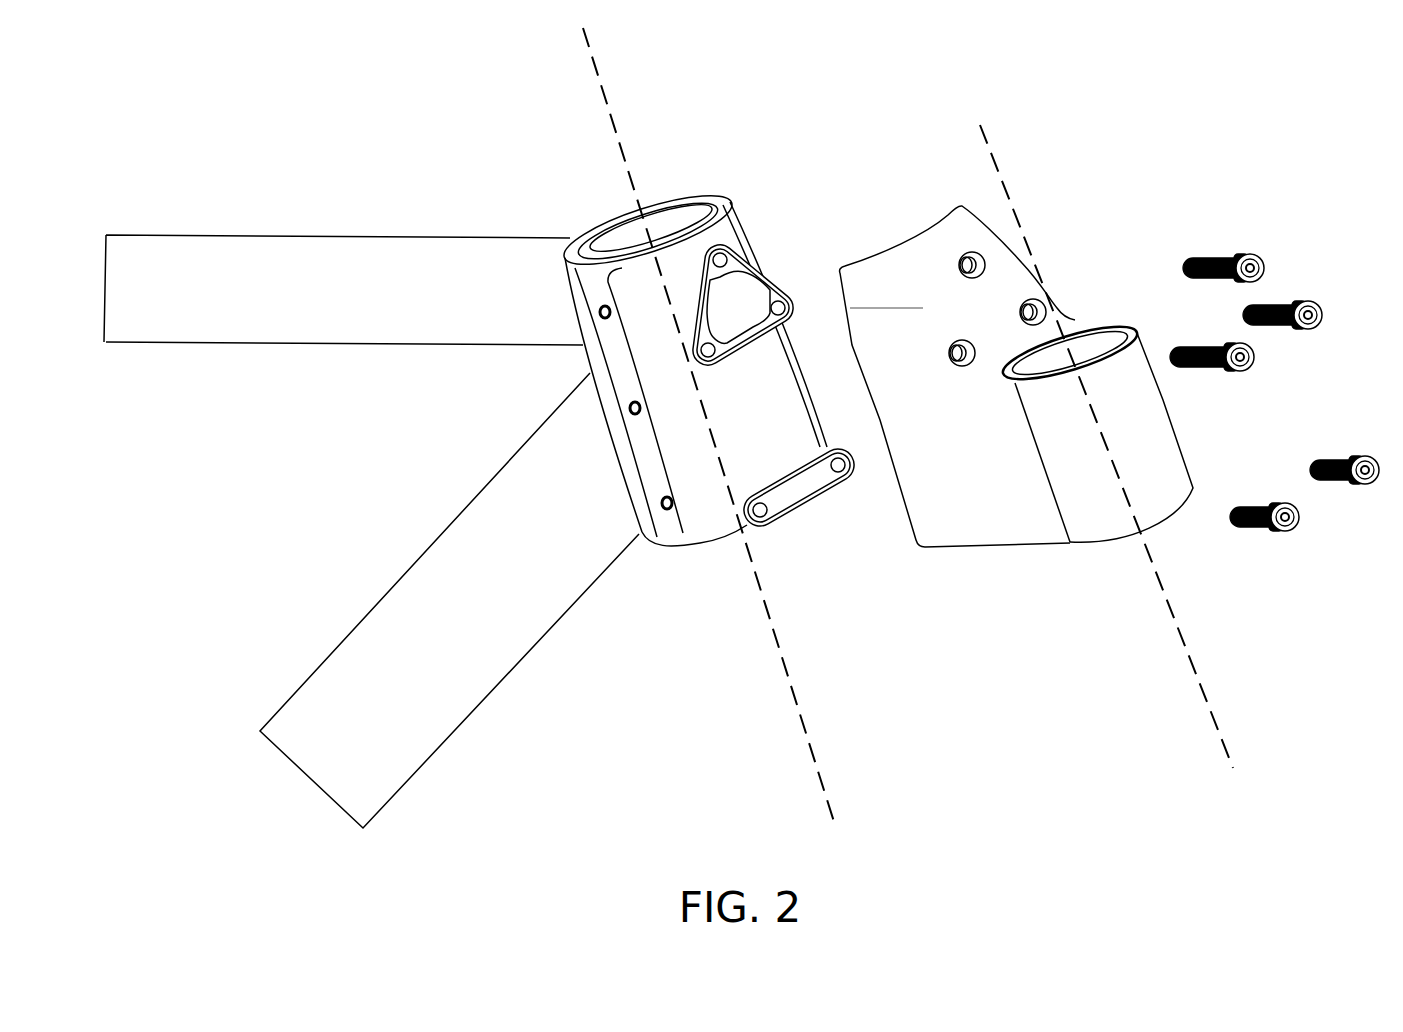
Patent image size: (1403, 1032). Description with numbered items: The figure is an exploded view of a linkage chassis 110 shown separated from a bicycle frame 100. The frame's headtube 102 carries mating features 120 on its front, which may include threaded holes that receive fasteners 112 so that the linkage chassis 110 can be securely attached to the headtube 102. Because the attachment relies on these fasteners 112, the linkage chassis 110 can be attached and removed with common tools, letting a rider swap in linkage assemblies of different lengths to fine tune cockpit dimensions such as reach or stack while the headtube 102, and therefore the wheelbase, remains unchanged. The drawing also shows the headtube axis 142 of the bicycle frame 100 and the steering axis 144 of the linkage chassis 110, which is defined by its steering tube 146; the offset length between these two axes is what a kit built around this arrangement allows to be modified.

The bicycle frame 100 is at (337, 267).
The headtube 102 is at (592, 363).
The linkage chassis 110 is at (1011, 389).
The fasteners 112 is at (1242, 257).
The mating features 120 is at (727, 258).
The headtube axis 142 is at (812, 748).
The steering axis 144 is at (1200, 677).
The steering tube 146 is at (1052, 384).